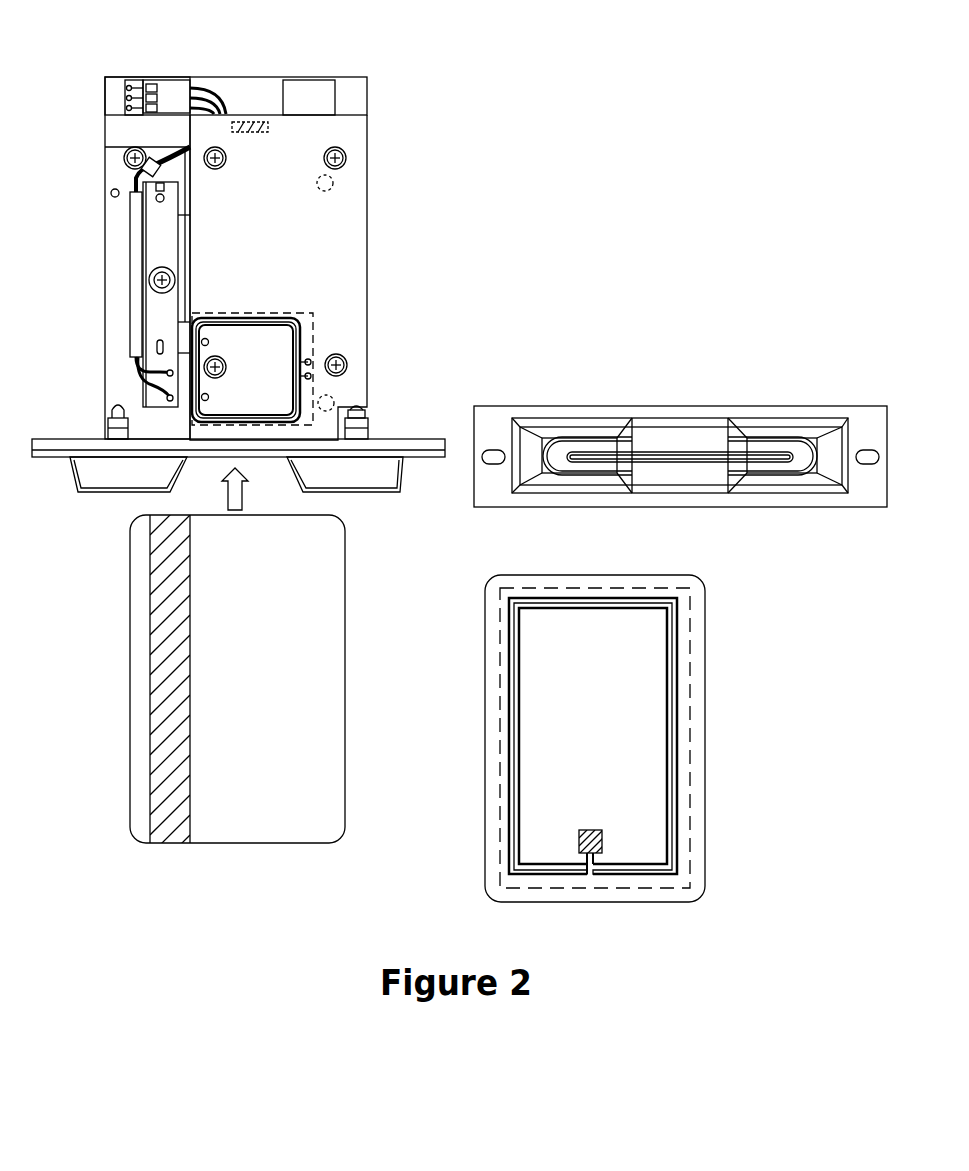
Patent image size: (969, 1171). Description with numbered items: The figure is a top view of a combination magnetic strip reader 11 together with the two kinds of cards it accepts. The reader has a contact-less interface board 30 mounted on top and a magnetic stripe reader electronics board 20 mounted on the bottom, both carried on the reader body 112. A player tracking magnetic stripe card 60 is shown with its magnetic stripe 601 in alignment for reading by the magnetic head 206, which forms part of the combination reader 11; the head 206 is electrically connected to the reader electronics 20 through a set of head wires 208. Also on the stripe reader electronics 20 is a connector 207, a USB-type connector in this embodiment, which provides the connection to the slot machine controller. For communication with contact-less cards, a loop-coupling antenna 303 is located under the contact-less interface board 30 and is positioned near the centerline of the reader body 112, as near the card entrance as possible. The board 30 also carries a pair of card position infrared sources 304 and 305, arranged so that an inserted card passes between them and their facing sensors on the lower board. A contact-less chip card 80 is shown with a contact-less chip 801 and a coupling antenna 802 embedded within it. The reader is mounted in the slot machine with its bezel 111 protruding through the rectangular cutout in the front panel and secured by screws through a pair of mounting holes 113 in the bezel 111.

The combination magnetic strip reader 11 is at (400, 503).
The magnetic stripe reader electronics board 20 is at (266, 105).
The contact-less interface board 30 is at (273, 250).
The player tracking magnetic stripe card 60 is at (276, 687).
The contact-less chip card 80 is at (595, 722).
The bezel 111 is at (108, 483).
The reader body 112 is at (115, 255).
The mounting holes 113 is at (494, 455).
The magnetic head 206 is at (153, 397).
The connector 207 is at (318, 93).
The head wires 208 is at (218, 92).
The loop-coupling antenna 303 is at (270, 337).
The card position infrared source 304 is at (335, 397).
The card position infrared source 305 is at (332, 178).
The magnetic stripe 601 is at (162, 663).
The contact-less chip 801 is at (583, 837).
The coupling antenna 802 is at (675, 747).